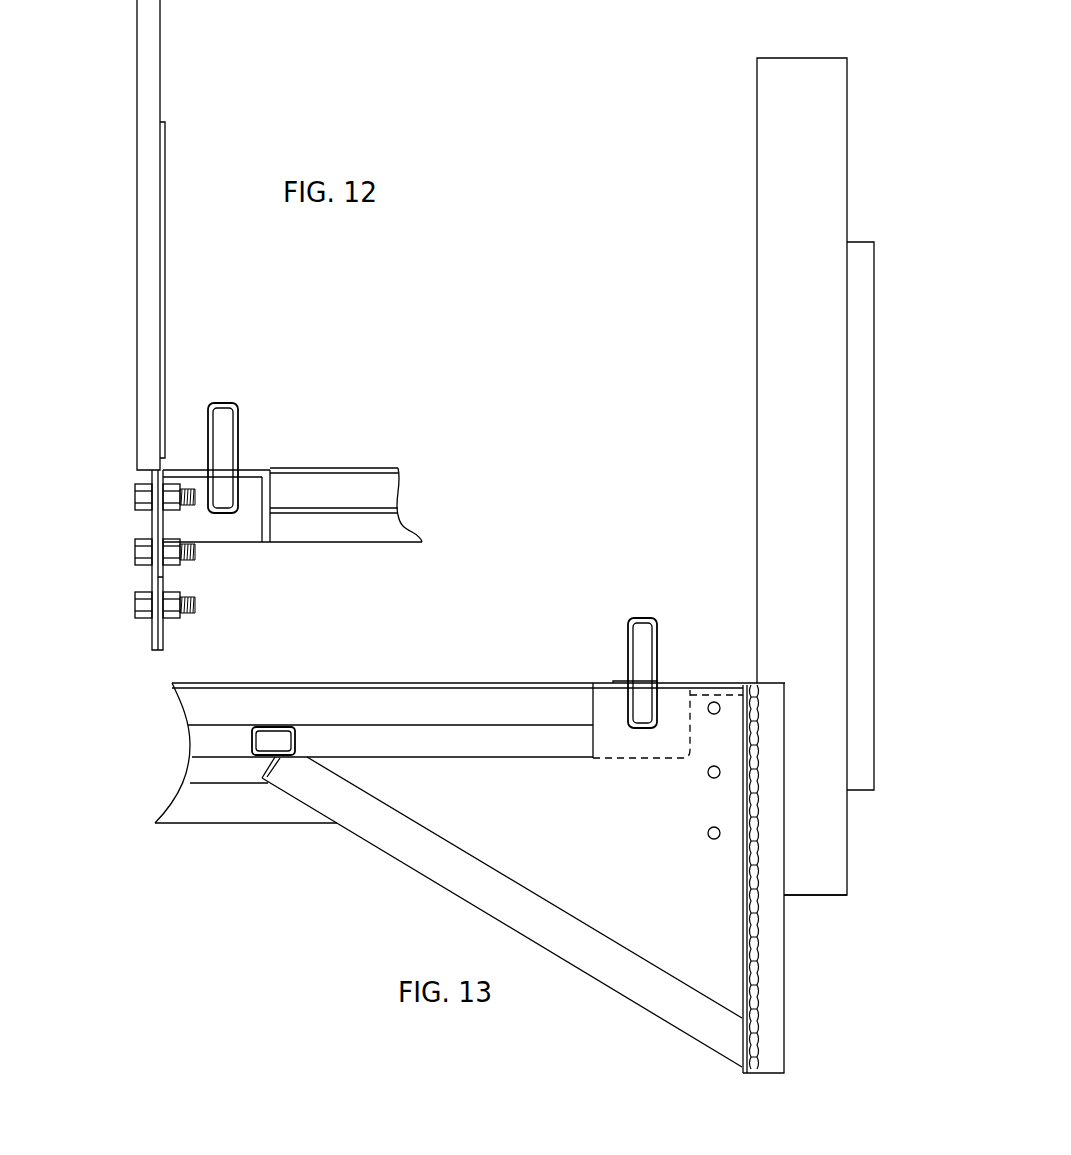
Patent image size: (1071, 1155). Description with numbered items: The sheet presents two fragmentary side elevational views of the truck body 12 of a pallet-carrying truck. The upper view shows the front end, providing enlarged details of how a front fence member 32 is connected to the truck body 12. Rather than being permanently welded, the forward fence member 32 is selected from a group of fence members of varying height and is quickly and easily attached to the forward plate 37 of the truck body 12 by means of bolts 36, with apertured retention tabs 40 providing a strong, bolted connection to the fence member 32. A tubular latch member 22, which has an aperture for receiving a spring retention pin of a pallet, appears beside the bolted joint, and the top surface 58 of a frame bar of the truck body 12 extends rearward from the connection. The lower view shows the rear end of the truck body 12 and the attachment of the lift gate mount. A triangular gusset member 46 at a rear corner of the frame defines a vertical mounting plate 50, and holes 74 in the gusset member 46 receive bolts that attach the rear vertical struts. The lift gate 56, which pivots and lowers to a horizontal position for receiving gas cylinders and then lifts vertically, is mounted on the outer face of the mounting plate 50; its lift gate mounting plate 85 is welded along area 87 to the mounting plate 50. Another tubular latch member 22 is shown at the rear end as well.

In FIG. 12, the truck body 12 is at (377, 543).
In FIG. 13, the truck body 12 is at (470, 752).
In FIG. 12, the tubular latch member 22 is at (232, 440).
In FIG. 13, the tubular latch member 22 is at (635, 630).
In FIG. 12, the forward fence member 32 is at (140, 152).
In FIG. 12, the bolt 36 is at (190, 550).
In FIG. 12, the forward plate 37 is at (165, 630).
In FIG. 12, the apertured retention tab 40 is at (152, 585).
In FIG. 13, the triangular gusset member 46 is at (502, 802).
In FIG. 13, the vertical mounting plate 50 is at (745, 855).
In FIG. 12, the lift gate 56 is at (778, 238).
In FIG. 12, the top surface 58 is at (372, 470).
In FIG. 13, the hole 74 is at (713, 705).
In FIG. 13, the lift gate mounting plate 85 is at (770, 963).
In FIG. 13, the weld area 87 is at (757, 892).